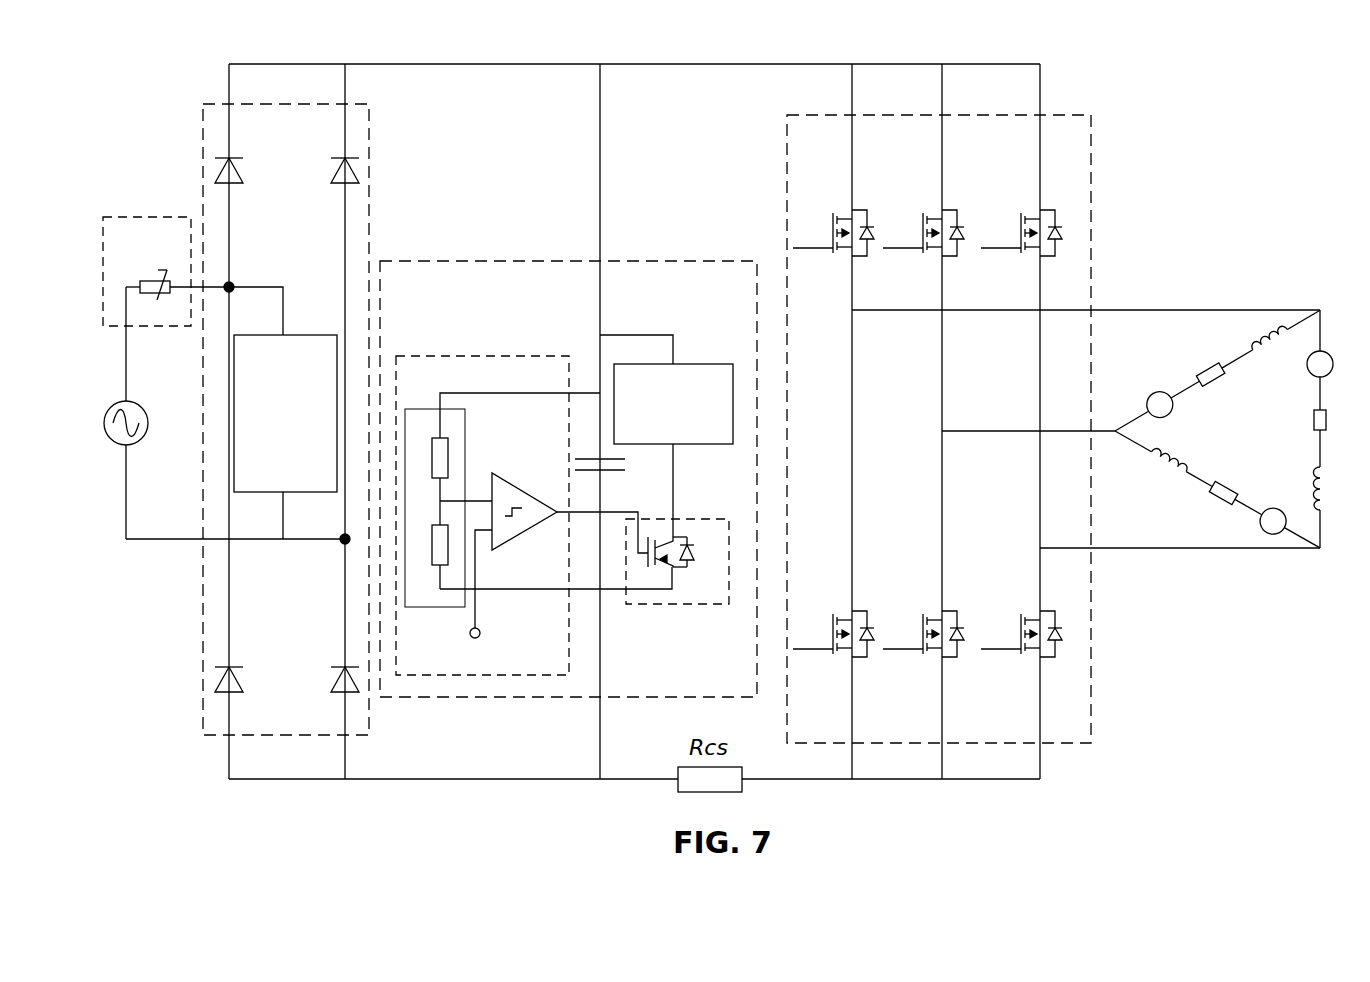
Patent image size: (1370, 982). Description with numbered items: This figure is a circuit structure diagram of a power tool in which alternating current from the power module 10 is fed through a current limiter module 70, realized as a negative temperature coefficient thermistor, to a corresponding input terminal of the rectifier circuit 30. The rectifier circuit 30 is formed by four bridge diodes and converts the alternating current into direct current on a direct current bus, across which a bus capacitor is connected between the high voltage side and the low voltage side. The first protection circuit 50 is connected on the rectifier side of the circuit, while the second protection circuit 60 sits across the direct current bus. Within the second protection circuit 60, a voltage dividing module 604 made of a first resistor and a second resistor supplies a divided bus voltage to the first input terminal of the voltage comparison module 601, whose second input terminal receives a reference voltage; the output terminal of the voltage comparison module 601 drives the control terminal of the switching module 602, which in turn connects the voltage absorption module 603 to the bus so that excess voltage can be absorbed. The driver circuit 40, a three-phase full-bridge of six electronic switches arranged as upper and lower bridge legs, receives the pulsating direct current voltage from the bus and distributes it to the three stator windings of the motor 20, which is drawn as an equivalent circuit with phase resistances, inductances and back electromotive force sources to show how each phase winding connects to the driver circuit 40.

The power module 10 is at (133, 402).
The motor 20 is at (1250, 300).
The rectifier circuit 30 is at (203, 104).
The driver circuit 40 is at (1060, 115).
The first protection circuit 50 is at (283, 335).
The second protection circuit 60 is at (514, 261).
The current limiter module 70 is at (172, 217).
The voltage comparison module 601 is at (488, 356).
The switching module 602 is at (683, 519).
The voltage absorption module 603 is at (683, 364).
The voltage dividing module 604 is at (465, 450).